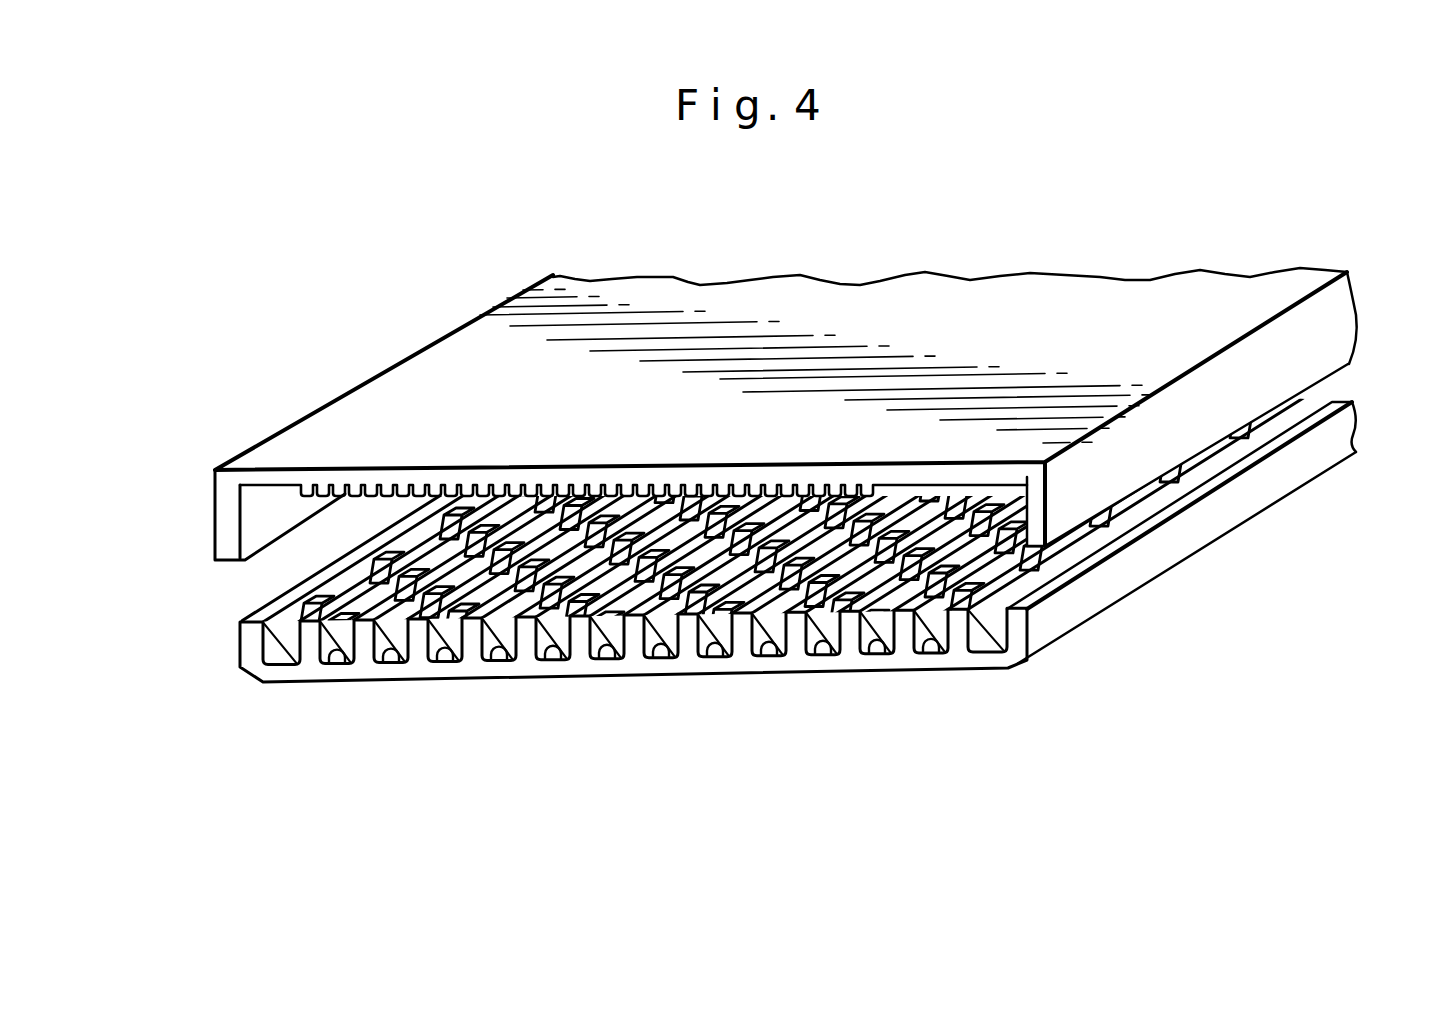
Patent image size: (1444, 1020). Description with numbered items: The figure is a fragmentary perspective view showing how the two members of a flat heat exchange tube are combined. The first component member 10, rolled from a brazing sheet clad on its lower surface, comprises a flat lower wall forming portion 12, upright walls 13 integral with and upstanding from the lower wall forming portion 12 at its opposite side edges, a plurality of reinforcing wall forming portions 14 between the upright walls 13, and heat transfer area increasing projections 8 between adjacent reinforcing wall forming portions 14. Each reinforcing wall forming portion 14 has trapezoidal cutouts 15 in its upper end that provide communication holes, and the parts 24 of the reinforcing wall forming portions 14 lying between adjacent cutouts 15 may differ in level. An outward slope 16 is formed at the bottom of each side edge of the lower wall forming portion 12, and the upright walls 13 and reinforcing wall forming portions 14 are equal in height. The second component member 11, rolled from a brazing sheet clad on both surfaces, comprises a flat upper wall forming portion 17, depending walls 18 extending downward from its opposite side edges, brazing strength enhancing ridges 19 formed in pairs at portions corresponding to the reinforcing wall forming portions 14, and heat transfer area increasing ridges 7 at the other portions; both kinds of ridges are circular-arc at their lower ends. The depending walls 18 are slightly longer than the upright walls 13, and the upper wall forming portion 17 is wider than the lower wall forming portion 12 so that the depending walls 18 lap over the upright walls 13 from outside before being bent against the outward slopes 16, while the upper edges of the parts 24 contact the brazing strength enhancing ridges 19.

The heat transfer area increasing ridges 7 is at (361, 487).
The heat transfer area increasing projections 8 is at (665, 657).
The first component member 10 is at (708, 668).
The second component member 11 is at (1145, 297).
The lower wall forming portion 12 is at (797, 668).
The upright walls 13 is at (243, 641).
The reinforcing wall forming portions 14 is at (473, 633).
The trapezoidal cutouts 15 is at (592, 555).
The outward slope 16 is at (257, 684).
The upper wall forming portion 17 is at (725, 478).
The depending walls 18 is at (230, 530).
The brazing strength enhancing ridges 19 is at (375, 486).
The parts of the reinforcing wall forming portions between adjacent cutouts 24 is at (507, 540).